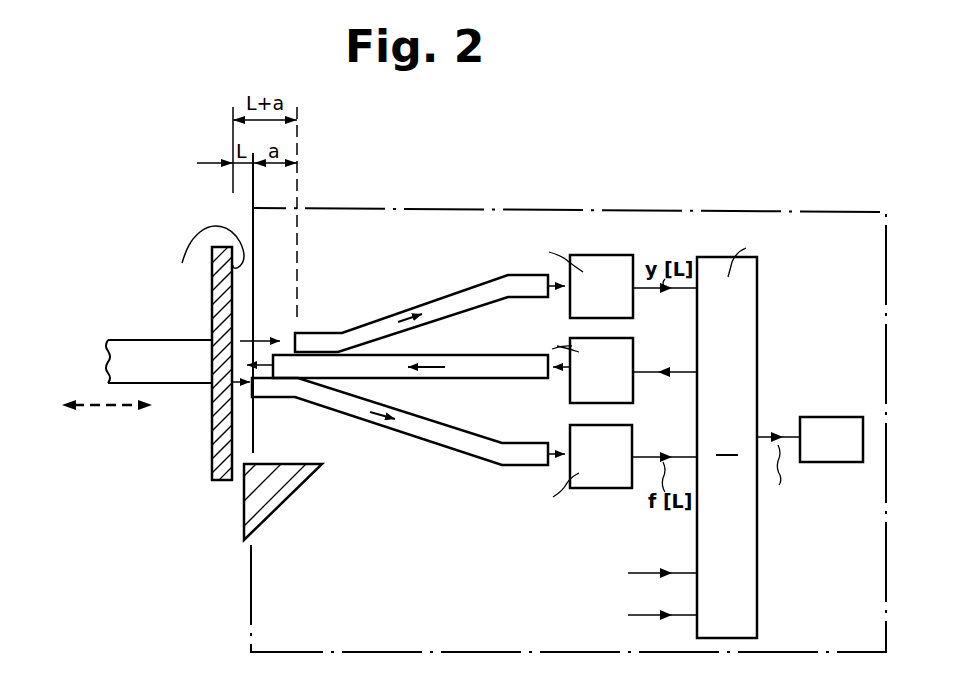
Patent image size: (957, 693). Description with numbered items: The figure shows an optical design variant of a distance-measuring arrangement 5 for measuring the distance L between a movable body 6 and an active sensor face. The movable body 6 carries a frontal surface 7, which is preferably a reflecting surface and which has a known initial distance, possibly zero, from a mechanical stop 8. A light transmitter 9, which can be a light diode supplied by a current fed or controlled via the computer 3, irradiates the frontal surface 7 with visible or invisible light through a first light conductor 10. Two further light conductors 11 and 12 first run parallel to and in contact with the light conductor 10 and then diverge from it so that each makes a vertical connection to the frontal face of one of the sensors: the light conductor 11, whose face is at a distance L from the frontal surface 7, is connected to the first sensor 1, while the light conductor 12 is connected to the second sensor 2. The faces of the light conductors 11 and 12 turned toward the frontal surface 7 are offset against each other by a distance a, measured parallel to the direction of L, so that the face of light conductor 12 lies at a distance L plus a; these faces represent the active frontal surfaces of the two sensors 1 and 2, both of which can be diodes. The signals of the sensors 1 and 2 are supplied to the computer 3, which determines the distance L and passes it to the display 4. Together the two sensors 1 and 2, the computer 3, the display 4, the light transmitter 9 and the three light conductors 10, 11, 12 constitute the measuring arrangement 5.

The first sensor 1 is at (603, 472).
The second sensor 2 is at (600, 272).
The computer 3 is at (715, 433).
The display 4 is at (828, 431).
The measuring arrangement 5 is at (502, 217).
The movable body 6 is at (222, 453).
The frontal surface 7 is at (206, 256).
The mechanical stop 8 is at (297, 481).
The light transmitter 9 is at (620, 380).
The first light conductor 10 is at (495, 373).
The light conductor 11 is at (418, 427).
The light conductor 12 is at (445, 301).